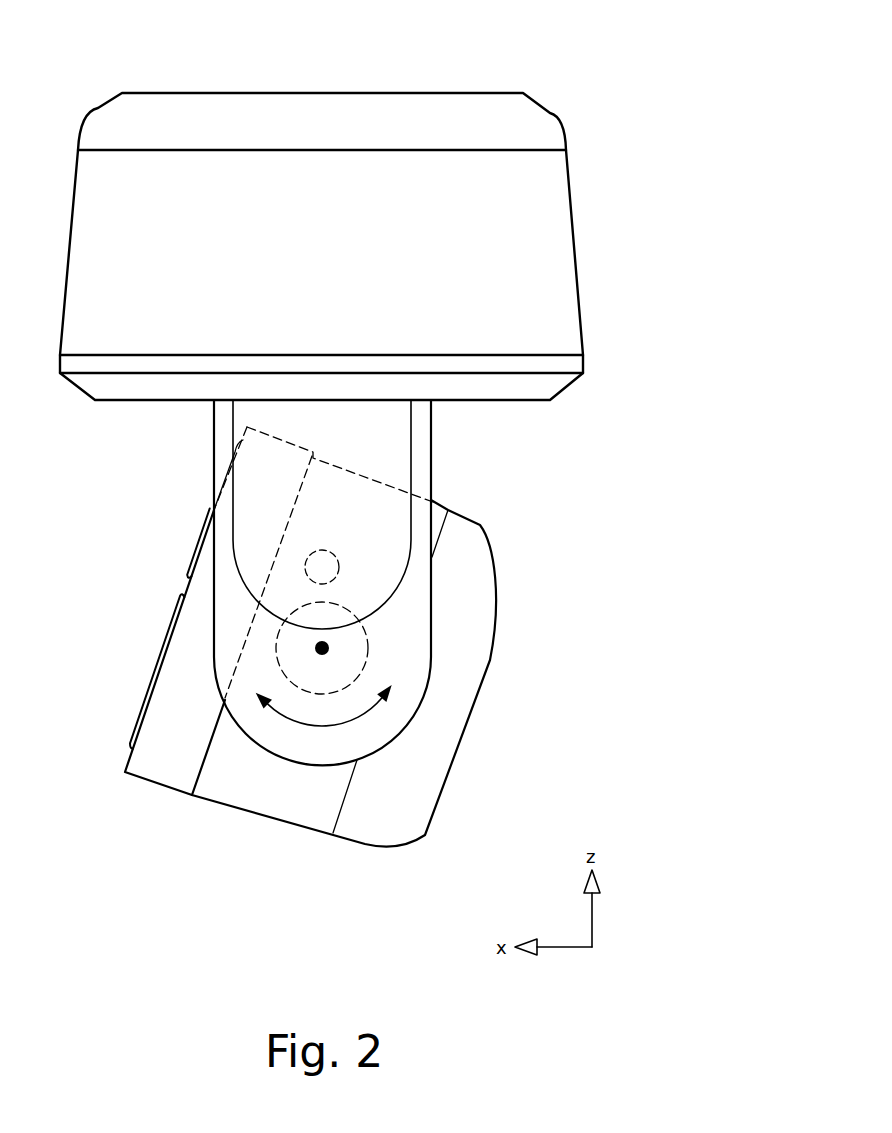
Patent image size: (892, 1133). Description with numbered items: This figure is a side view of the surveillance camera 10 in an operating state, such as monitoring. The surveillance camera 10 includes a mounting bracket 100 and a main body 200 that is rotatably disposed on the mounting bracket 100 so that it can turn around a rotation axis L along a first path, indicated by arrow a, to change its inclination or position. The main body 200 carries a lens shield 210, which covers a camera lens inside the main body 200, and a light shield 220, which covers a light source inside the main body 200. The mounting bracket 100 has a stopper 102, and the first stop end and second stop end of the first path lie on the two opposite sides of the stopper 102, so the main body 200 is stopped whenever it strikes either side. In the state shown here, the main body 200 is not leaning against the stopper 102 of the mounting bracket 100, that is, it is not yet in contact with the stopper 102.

The surveillance camera 10 is at (88, 30).
The mounting bracket 100 is at (612, 227).
The stopper 102 is at (317, 553).
The main body 200 is at (540, 573).
The lens shield 210 is at (156, 672).
The light shield 220 is at (203, 541).